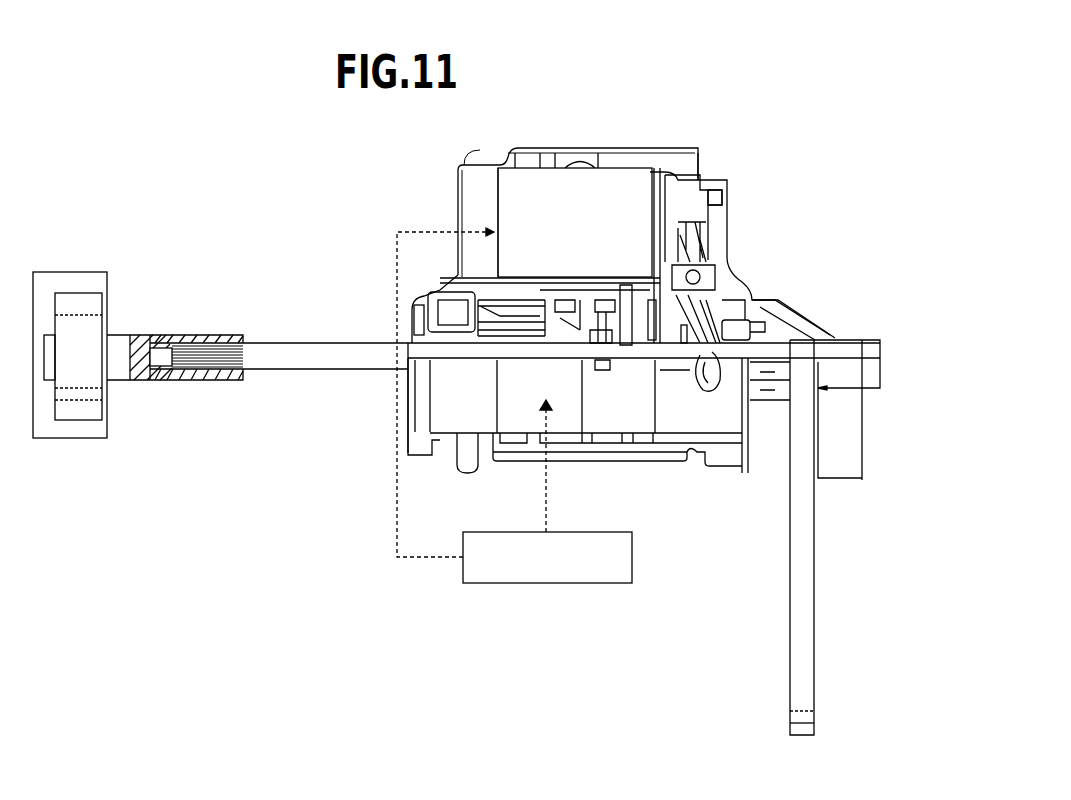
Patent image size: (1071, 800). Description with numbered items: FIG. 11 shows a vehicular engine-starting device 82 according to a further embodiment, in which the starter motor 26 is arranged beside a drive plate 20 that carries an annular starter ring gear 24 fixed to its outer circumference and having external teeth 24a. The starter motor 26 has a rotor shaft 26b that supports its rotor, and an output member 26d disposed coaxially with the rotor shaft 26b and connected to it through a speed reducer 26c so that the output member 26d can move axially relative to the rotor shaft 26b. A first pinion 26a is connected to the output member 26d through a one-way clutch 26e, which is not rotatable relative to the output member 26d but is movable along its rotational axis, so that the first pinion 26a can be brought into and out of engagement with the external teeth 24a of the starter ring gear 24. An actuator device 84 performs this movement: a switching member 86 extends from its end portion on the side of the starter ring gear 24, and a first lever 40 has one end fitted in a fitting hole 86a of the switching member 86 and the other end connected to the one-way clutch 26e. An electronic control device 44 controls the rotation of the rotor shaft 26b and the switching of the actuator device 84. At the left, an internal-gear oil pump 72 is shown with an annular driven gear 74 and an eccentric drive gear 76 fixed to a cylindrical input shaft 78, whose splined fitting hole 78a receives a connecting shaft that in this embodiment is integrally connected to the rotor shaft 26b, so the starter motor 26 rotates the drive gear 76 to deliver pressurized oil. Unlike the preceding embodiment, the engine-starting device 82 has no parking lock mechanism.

The drive plate 20 is at (787, 667).
The starter ring gear 24 is at (800, 507).
The external teeth 24a is at (805, 730).
The starter motor 26 is at (446, 442).
The first pinion 26a is at (834, 328).
The rotor shaft 26b is at (346, 357).
The speed reducer 26c is at (622, 280).
The output member 26d is at (728, 383).
The one-way clutch 26e is at (748, 300).
The first lever 40 is at (680, 240).
The electronic control device 44 is at (533, 583).
The oil pump 72 is at (118, 424).
The driven gear 74 is at (76, 307).
The drive gear 76 is at (63, 328).
The input shaft 78 is at (152, 381).
The fitting hole 78a is at (199, 381).
The engine-starting device 82 is at (729, 169).
The actuator device 84 is at (553, 182).
The switching member 86 is at (722, 212).
The fitting hole 86a is at (712, 232).